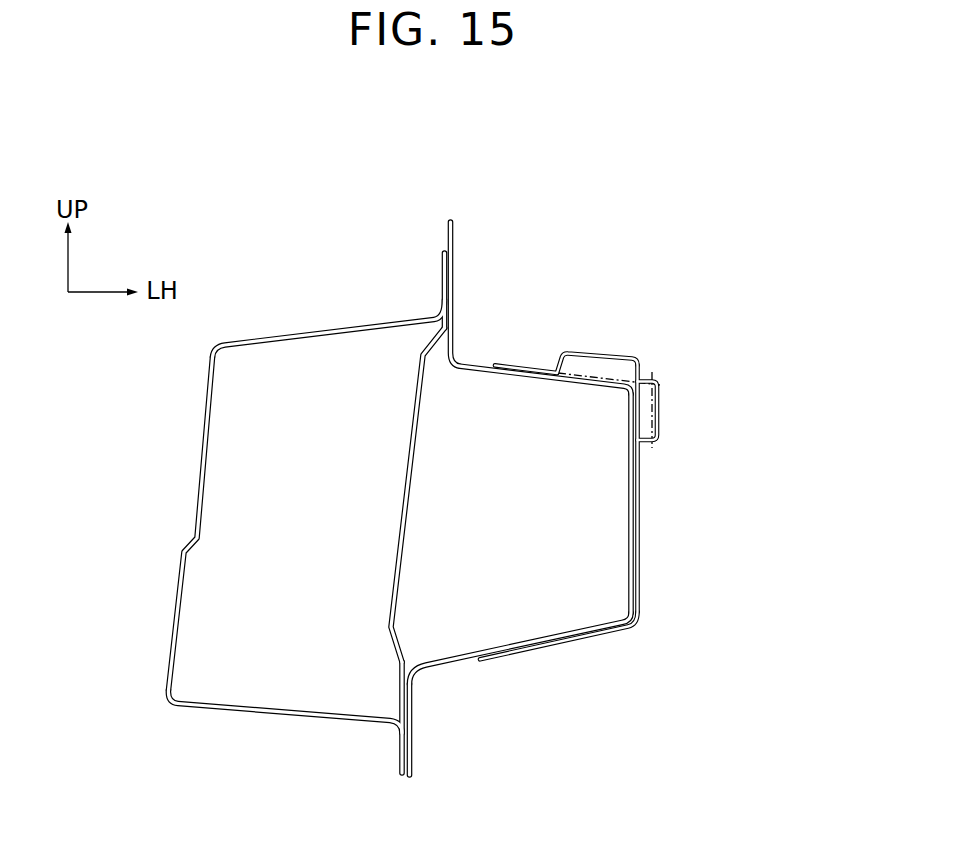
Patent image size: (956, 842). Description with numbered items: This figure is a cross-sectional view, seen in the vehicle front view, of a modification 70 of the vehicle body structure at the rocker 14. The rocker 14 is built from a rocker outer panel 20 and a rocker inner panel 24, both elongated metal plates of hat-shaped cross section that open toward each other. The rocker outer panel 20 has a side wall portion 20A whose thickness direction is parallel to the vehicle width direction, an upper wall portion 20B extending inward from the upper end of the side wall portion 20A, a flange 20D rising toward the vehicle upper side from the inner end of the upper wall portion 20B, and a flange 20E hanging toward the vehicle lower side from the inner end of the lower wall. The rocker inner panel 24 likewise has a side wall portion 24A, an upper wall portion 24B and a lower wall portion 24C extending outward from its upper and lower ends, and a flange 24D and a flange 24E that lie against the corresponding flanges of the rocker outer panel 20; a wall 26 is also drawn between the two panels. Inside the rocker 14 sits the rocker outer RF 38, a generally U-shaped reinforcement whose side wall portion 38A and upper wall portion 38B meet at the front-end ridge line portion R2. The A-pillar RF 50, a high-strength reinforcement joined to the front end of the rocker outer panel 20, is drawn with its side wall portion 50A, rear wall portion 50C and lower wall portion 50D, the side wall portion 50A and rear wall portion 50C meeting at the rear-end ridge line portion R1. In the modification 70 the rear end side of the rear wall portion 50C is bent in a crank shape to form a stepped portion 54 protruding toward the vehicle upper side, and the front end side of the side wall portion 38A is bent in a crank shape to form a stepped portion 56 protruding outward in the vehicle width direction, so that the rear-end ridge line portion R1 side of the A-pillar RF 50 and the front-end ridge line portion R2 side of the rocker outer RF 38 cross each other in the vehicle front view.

The rocker 14 is at (196, 415).
The rocker outer panel 20 is at (457, 667).
The side wall portion 20A is at (627, 512).
The upper wall portion 20B is at (515, 390).
The flange 20D is at (454, 278).
The flange 20E is at (413, 740).
The rocker inner panel 24 is at (193, 490).
The side wall portion 24A is at (182, 560).
The upper wall portion 24B is at (292, 338).
The lower wall portion 24C is at (305, 710).
The flange 24D is at (441, 288).
The flange 24E is at (397, 750).
The partition wall 26 is at (405, 488).
The rocker outer RF 38 is at (680, 348).
The side wall portion 38A is at (660, 438).
The upper wall portion 38B is at (581, 364).
The A-pillar RF 50 is at (553, 358).
The side wall portion 50A is at (642, 520).
The rear wall portion 50C is at (512, 362).
The lower wall portion 50D is at (562, 652).
The stepped portion 54 is at (598, 351).
The stepped portion 56 is at (660, 407).
The modification 70 is at (720, 282).
The rear-end ridge line portion R1 is at (641, 360).
The front-end ridge line portion R2 is at (660, 382).